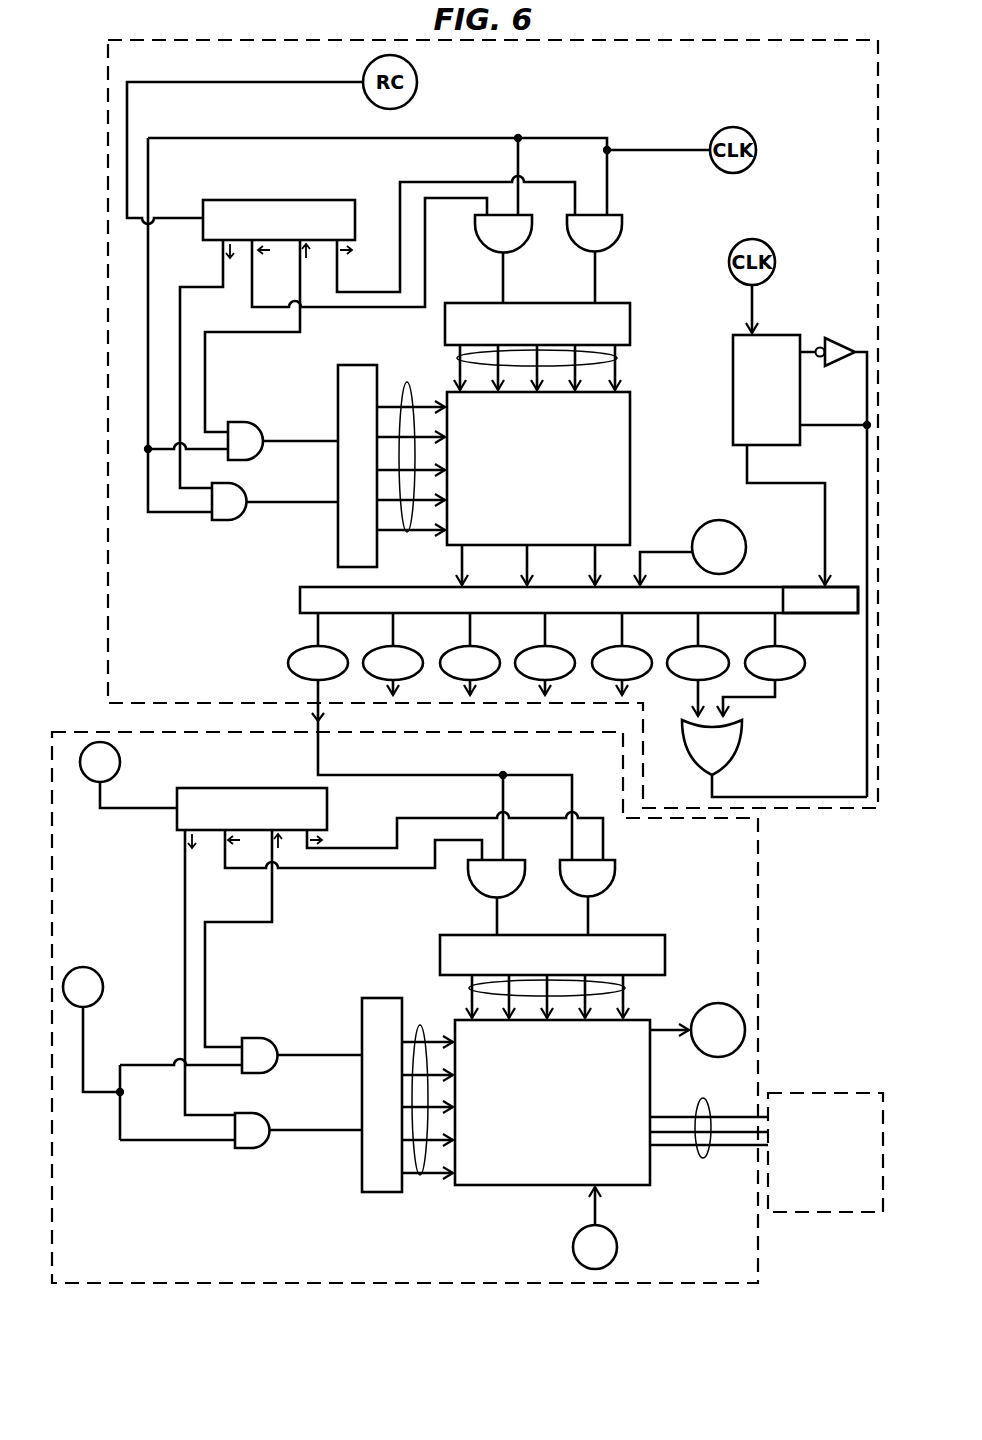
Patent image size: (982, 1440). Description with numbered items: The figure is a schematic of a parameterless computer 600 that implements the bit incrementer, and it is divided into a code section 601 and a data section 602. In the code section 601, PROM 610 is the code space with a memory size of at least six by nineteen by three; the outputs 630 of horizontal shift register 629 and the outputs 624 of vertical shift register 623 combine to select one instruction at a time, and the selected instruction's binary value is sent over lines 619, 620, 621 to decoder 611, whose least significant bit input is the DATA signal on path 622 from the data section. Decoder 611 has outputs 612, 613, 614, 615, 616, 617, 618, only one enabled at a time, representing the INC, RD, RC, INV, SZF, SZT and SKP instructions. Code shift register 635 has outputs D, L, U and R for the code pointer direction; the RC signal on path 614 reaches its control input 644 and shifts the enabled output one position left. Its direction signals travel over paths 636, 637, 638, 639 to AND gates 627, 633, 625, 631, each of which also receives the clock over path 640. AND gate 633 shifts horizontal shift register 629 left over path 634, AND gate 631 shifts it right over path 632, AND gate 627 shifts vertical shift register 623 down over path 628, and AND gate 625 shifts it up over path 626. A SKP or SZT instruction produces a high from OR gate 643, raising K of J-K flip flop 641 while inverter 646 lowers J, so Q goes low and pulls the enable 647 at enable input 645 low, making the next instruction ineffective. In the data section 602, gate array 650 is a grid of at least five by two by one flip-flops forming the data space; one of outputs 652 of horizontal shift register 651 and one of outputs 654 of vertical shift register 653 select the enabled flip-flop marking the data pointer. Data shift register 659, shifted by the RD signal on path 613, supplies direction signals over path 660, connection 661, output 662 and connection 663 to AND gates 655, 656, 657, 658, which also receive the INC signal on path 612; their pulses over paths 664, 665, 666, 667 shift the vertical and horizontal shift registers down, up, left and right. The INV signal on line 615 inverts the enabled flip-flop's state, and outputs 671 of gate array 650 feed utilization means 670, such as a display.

The parameterless computer 600 is at (215, 28).
The code section 601 is at (108, 136).
The data section 602 is at (758, 852).
The PROM 610 is at (632, 422).
The 1 of 16 decoder 611 is at (300, 596).
The INC signal path 612 is at (316, 630).
The RD signal path 613 is at (391, 630).
The RC signal path 614 is at (468, 630).
The INV signal line 615 is at (543, 630).
The SZF signal path 616 is at (620, 630).
The SZT signal path 617 is at (696, 630).
The SKP signal path 618 is at (773, 630).
The instruction output line 619 is at (460, 565).
The instruction output line 620 is at (525, 565).
The instruction output line 621 is at (592, 565).
The DATA signal path 622 is at (665, 552).
The vertical shift register 623 is at (358, 364).
The vertical shift register outputs 624 is at (407, 385).
The AND gate 625 is at (242, 422).
The AND gate output path 626 is at (290, 440).
The AND gate 627 is at (219, 522).
The AND gate output path 628 is at (262, 504).
The horizontal shift register 629 is at (632, 316).
The horizontal shift register outputs 630 is at (617, 356).
The AND gate 631 is at (623, 226).
The shift-right signal path 632 is at (598, 257).
The AND gate 633 is at (475, 234).
The shift-left signal path 634 is at (500, 270).
The code shift register 635 is at (262, 198).
The down pointer direction path 636 is at (222, 268).
The left pointer direction path 637 is at (250, 284).
The up pointer direction path 638 is at (260, 335).
The right pointer direction path 639 is at (398, 212).
The clock signal path 640 is at (482, 136).
The J-K flip flop 641 is at (790, 446).
The OR gate 643 is at (742, 748).
The control input 644 is at (181, 216).
The enable input 645 is at (825, 506).
The inverter 646 is at (838, 338).
The enable 647 is at (840, 614).
The gate array 650 is at (470, 1186).
The horizontal shift register 651 is at (665, 944).
The horizontal shift register outputs 652 is at (625, 989).
The vertical shift register 653 is at (372, 997).
The vertical shift register outputs 654 is at (420, 1025).
The AND gate 655 is at (248, 1150).
The AND gate 656 is at (272, 1038).
The AND gate 657 is at (468, 872).
The AND gate 658 is at (616, 868).
The data shift register 659 is at (282, 788).
The down data direction path 660 is at (185, 862).
The left data direction path 661 is at (237, 870).
The up output 662 is at (272, 902).
The right data direction path 663 is at (366, 846).
The AND gate output path 664 is at (296, 1132).
The AND gate output path 665 is at (298, 1057).
The shift-left signal path 666 is at (496, 906).
The shift-right signal path 667 is at (590, 903).
The utilization means 670 is at (845, 1093).
The gate array outputs 671 is at (704, 1160).